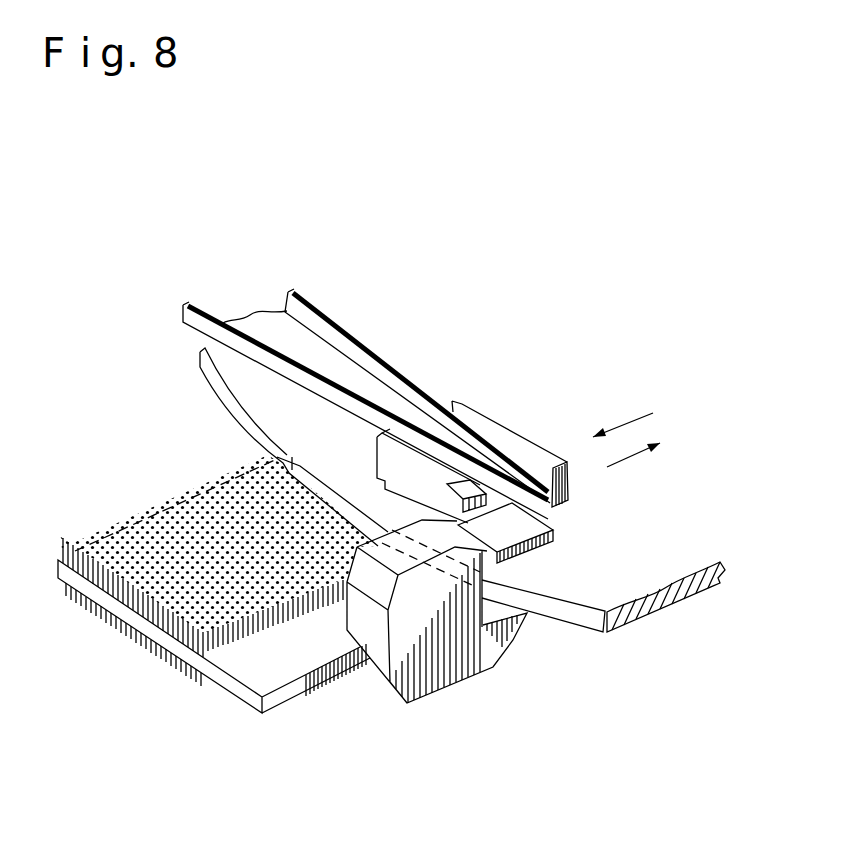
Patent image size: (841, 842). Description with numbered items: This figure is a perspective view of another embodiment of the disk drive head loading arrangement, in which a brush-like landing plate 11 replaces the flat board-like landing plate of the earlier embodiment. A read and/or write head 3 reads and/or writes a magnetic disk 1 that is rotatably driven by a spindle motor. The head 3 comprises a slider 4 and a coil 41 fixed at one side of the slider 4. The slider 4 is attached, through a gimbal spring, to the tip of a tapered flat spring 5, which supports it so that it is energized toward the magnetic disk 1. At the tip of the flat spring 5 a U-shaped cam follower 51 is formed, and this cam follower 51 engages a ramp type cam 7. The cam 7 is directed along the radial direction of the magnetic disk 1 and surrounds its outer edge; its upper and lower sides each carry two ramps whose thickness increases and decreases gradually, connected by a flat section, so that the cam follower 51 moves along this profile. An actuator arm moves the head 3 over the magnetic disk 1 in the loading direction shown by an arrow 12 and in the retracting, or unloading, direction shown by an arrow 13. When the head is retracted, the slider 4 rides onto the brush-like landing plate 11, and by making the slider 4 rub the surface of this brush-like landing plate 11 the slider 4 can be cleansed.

The magnetic disk 1 is at (655, 603).
The read and/or write head 3 is at (461, 348).
The slider 4 is at (523, 437).
The coil 41 is at (465, 480).
The tapered flat spring 5 is at (384, 362).
The U-shaped cam follower 51 is at (568, 500).
The ramp type cam 7 is at (467, 668).
The brush-like landing plate 11 is at (163, 523).
The arrow showing loading direction 12 is at (633, 458).
The arrow showing retracting direction 13 is at (623, 418).